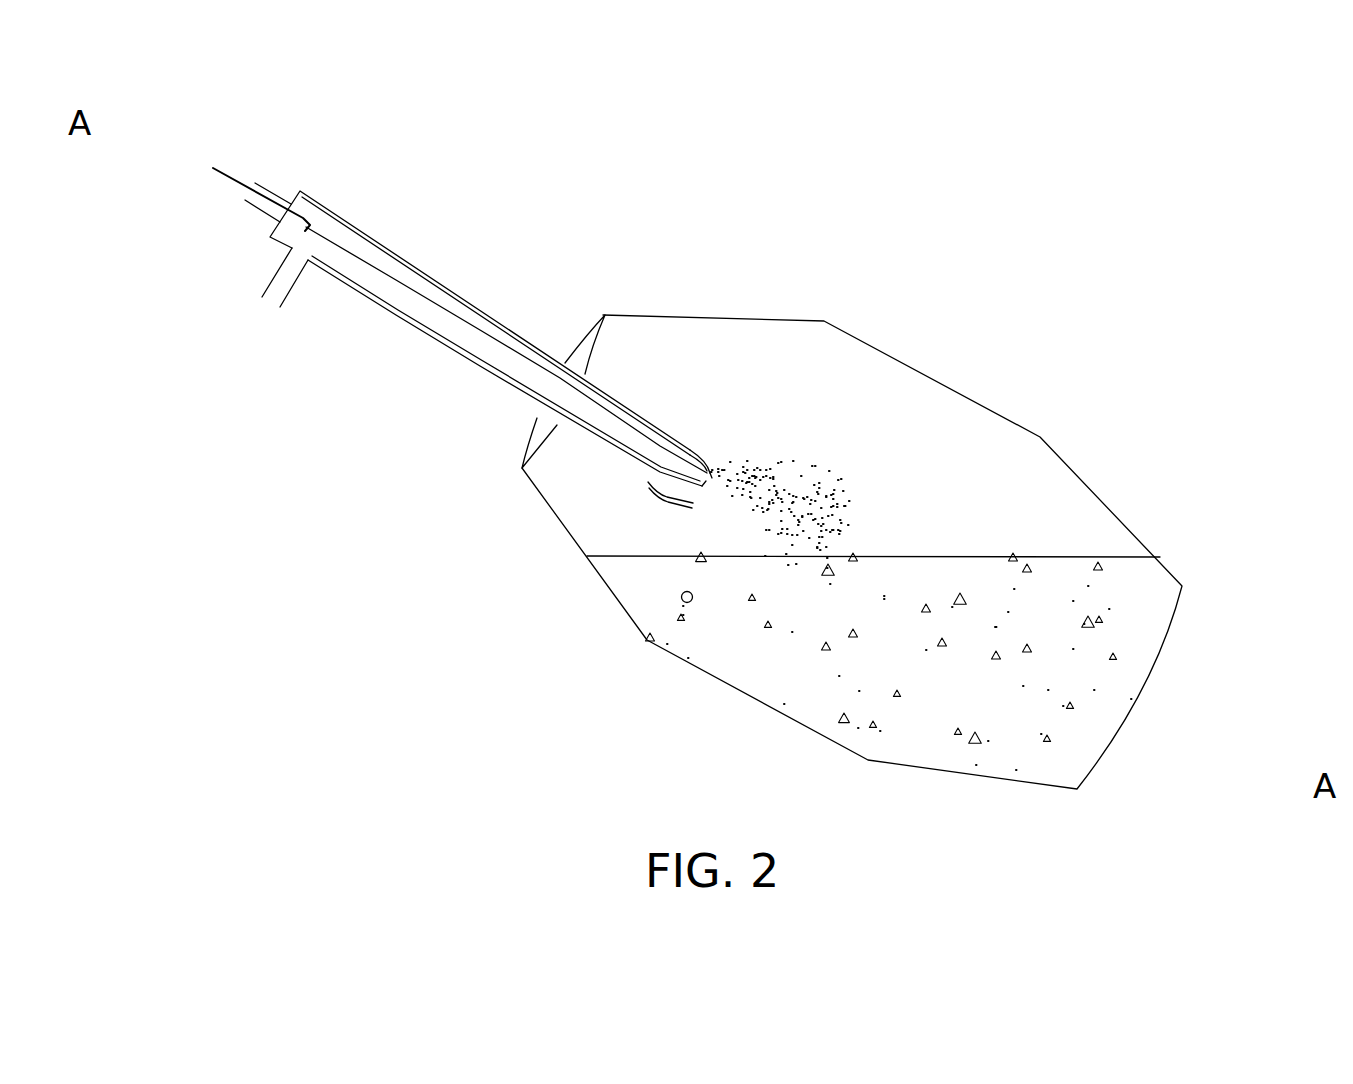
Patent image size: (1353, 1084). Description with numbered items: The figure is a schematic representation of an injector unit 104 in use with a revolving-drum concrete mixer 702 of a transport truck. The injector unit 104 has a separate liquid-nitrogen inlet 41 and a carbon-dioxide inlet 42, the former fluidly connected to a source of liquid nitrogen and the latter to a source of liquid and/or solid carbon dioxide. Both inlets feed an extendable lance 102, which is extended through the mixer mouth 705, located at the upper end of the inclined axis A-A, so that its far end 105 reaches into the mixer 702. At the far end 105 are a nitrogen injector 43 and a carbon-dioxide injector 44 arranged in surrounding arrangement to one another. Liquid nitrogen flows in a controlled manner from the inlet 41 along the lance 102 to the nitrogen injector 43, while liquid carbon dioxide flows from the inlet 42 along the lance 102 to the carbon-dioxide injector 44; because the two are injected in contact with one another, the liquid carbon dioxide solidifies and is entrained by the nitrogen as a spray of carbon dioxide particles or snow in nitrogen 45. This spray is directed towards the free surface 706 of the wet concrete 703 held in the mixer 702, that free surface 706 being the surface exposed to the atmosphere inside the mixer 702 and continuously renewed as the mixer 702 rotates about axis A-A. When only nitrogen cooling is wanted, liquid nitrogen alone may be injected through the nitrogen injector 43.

The liquid-nitrogen inlet 41 is at (241, 182).
The carbon-dioxide inlet 42 is at (295, 270).
The nitrogen injector 43 is at (700, 481).
The carbon-dioxide injector 44 is at (712, 473).
The spray of carbon dioxide particles/snow entrained by nitrogen 45 is at (803, 495).
The extendable lance 102 is at (423, 338).
The injector unit 104 is at (440, 309).
The far end of lance 105 is at (714, 448).
The revolving-drum concrete mixer 702 is at (1070, 468).
The wet concrete 703 is at (681, 597).
The mixer mouth 705 is at (584, 352).
The free surface 706 is at (947, 556).